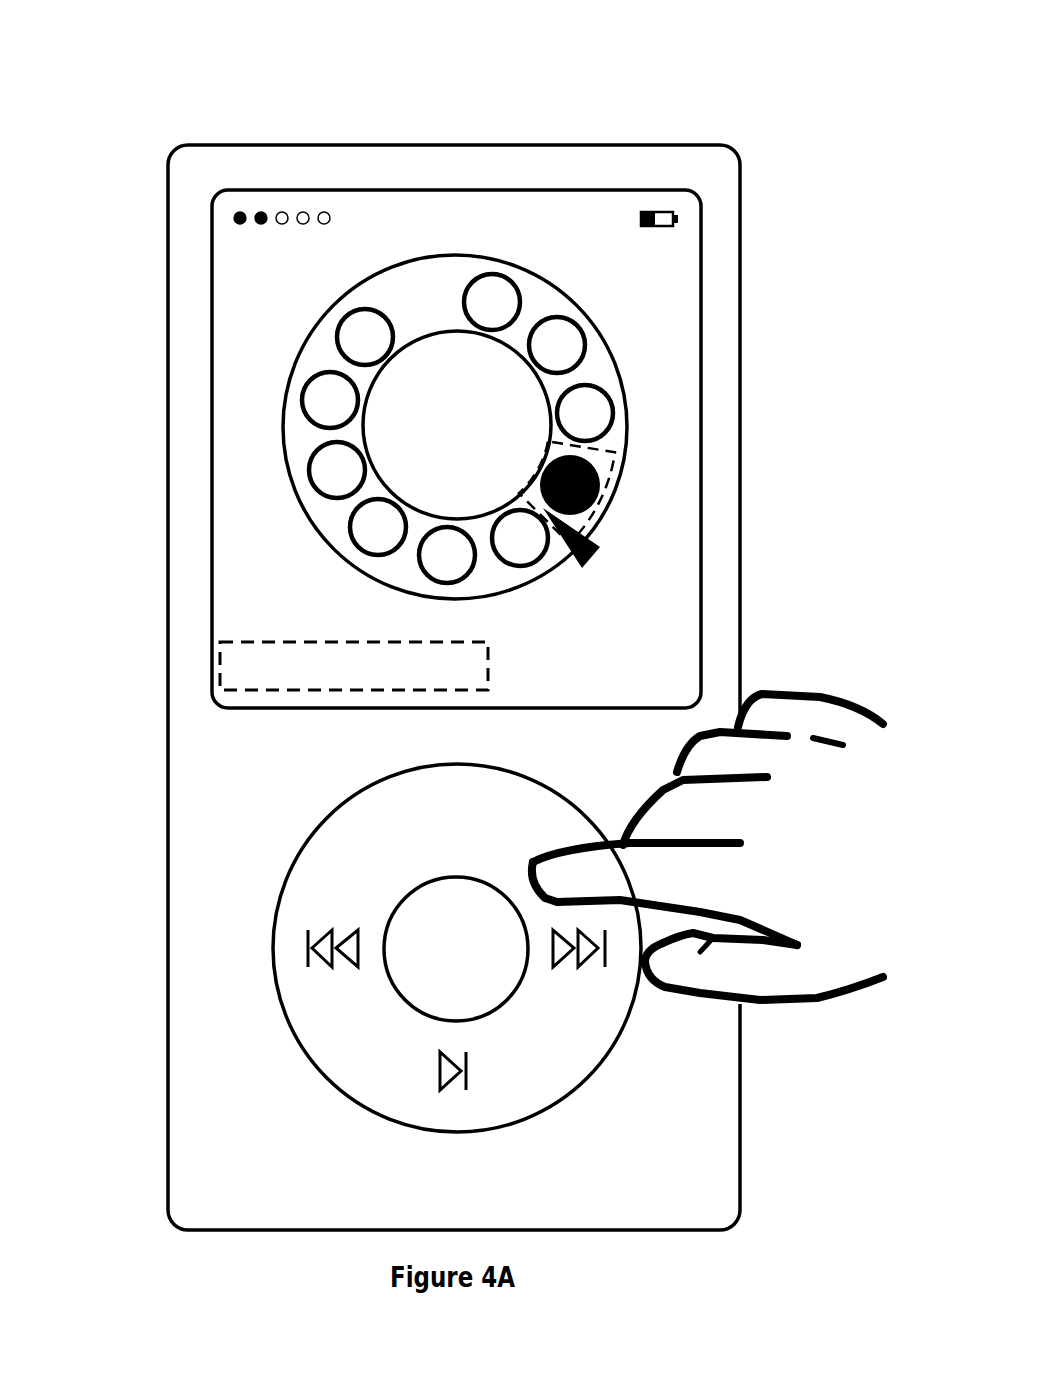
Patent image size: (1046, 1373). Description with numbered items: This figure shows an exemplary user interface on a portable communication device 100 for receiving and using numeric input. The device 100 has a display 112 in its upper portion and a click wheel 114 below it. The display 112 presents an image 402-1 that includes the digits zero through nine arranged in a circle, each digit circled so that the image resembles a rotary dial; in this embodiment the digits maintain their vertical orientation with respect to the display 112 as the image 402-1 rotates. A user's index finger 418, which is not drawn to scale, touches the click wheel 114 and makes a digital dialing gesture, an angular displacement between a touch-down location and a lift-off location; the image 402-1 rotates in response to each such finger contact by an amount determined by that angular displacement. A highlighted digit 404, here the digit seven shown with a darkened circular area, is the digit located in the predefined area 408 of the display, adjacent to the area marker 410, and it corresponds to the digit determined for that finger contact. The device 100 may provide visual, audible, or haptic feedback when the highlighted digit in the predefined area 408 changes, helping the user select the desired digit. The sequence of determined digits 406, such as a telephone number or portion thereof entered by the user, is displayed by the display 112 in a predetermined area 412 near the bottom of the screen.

The device 100 is at (604, 74).
The display 112 is at (673, 681).
The click wheel 114 is at (273, 915).
The image 402-1 is at (283, 408).
The highlighted digit 404 is at (602, 479).
The determined digits 406 is at (268, 650).
The predefined area 408 is at (602, 507).
The area marker 410 is at (600, 550).
The predetermined area 412 is at (306, 640).
The index finger 418 is at (610, 887).